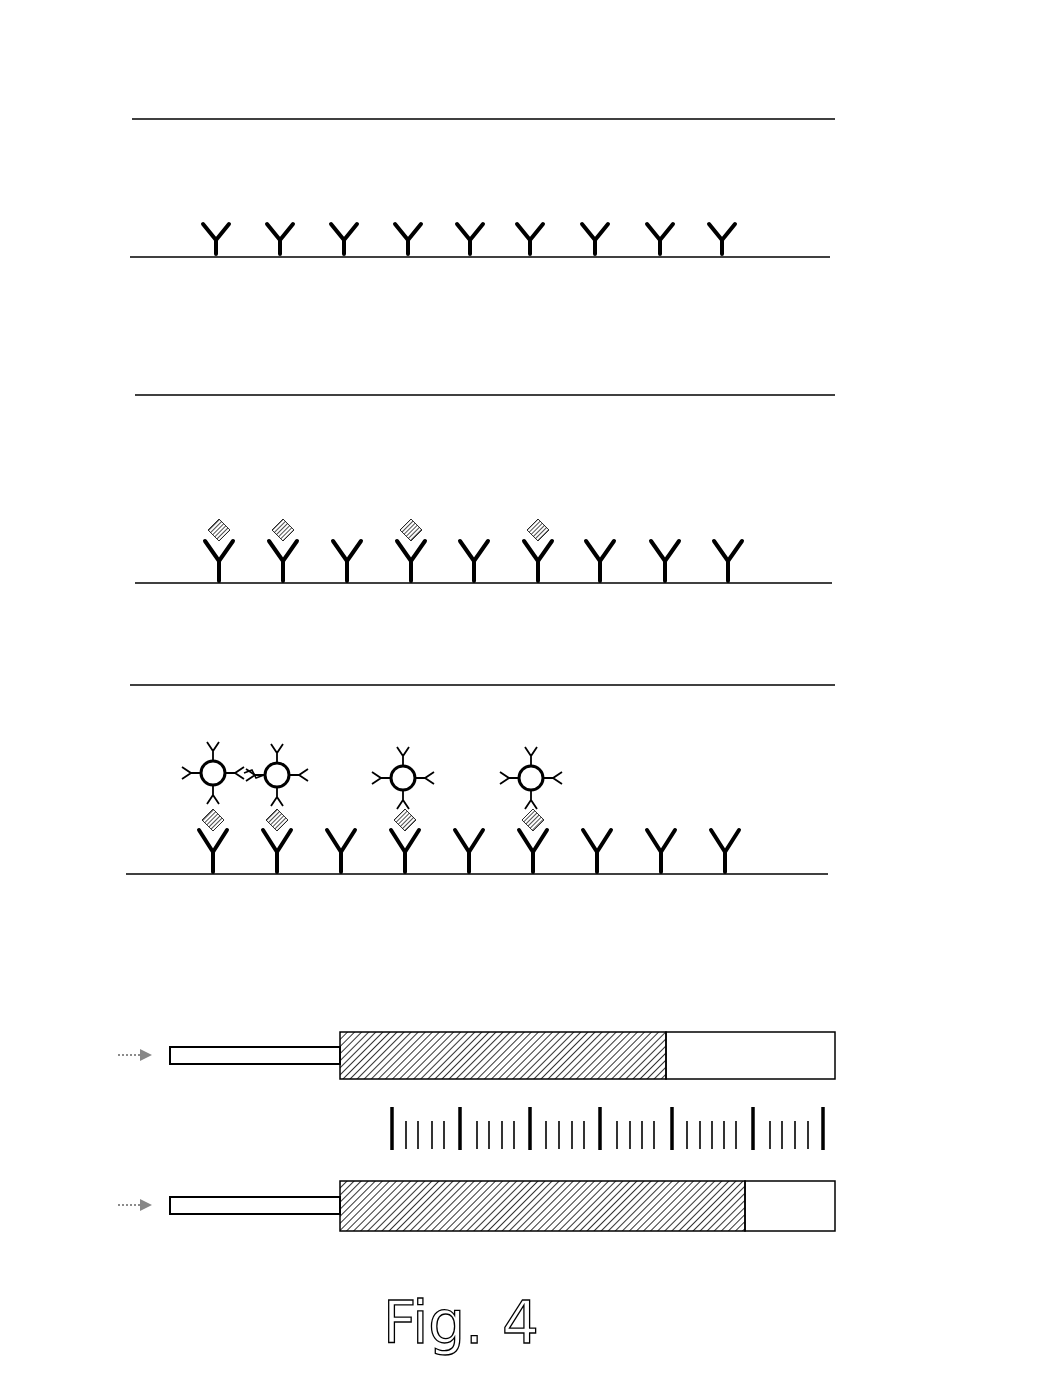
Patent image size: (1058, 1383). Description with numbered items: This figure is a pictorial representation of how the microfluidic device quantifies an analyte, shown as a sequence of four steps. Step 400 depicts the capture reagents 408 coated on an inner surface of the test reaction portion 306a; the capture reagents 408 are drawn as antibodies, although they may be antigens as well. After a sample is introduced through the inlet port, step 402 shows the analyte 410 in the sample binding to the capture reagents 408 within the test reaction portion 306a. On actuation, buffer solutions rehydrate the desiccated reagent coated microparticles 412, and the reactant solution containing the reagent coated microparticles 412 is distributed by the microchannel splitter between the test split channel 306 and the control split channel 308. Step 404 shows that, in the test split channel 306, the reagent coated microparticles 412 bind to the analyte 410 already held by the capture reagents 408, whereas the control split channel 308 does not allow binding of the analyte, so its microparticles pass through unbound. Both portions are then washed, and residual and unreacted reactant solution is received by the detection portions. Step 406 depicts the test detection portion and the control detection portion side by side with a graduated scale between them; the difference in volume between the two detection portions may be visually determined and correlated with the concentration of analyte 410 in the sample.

The step 400 is at (170, 86).
The step 402 is at (158, 350).
The step 404 is at (158, 652).
The step 406 is at (176, 953).
The test reaction portion 306a is at (795, 263).
The test split channel 306 is at (755, 1048).
The control split channel 308 is at (790, 1220).
The capture reagents 408 is at (737, 219).
The analyte 410 is at (407, 522).
The reagent coated microparticles 412 is at (402, 780).